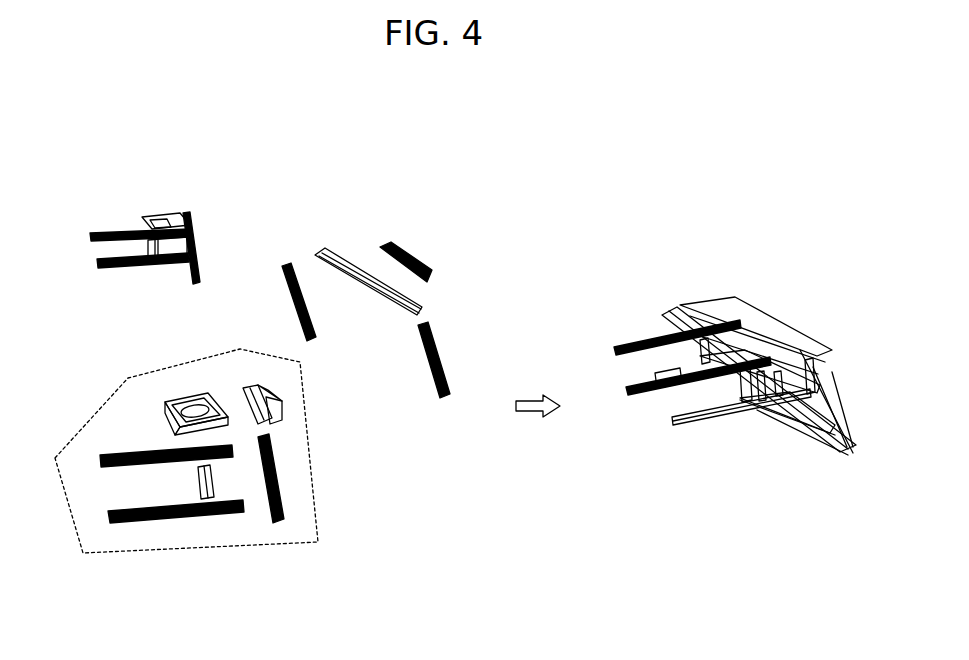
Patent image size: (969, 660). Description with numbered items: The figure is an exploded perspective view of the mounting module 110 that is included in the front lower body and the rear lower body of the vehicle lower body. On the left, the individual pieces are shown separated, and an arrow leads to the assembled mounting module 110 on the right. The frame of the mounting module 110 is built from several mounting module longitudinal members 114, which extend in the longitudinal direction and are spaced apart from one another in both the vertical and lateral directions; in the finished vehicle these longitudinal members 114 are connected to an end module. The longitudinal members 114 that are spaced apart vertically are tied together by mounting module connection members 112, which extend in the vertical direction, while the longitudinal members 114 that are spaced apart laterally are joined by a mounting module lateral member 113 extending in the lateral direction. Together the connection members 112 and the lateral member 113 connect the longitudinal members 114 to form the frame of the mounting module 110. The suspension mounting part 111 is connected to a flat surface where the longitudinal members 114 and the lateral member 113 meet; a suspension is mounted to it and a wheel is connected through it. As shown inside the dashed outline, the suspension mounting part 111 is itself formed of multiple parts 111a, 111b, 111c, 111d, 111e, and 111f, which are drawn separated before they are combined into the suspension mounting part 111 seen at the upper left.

The mounting module 110 is at (800, 330).
The suspension mounting part 111 is at (158, 200).
The part of the suspension mounting part 111a is at (178, 398).
The part of the suspension mounting part 111b is at (270, 398).
The part of the suspension mounting part 111c is at (118, 455).
The part of the suspension mounting part 111d is at (174, 520).
The part of the suspension mounting part 111e is at (211, 513).
The part of the suspension mounting part 111f is at (278, 489).
The mounting module connection member 112 is at (288, 266).
The mounting module lateral member 113 is at (343, 246).
The mounting module longitudinal member 114 is at (410, 262).